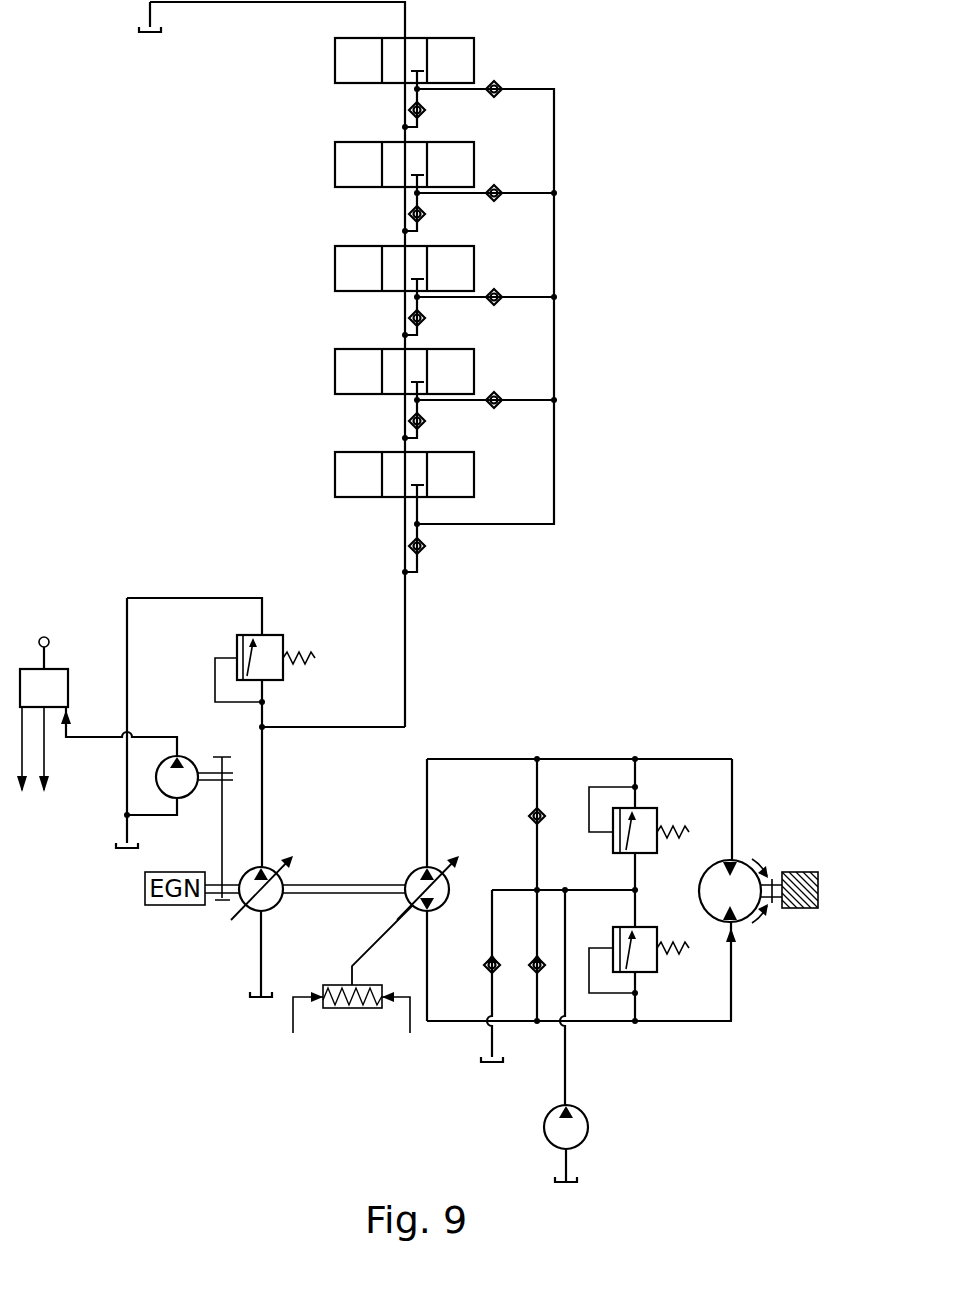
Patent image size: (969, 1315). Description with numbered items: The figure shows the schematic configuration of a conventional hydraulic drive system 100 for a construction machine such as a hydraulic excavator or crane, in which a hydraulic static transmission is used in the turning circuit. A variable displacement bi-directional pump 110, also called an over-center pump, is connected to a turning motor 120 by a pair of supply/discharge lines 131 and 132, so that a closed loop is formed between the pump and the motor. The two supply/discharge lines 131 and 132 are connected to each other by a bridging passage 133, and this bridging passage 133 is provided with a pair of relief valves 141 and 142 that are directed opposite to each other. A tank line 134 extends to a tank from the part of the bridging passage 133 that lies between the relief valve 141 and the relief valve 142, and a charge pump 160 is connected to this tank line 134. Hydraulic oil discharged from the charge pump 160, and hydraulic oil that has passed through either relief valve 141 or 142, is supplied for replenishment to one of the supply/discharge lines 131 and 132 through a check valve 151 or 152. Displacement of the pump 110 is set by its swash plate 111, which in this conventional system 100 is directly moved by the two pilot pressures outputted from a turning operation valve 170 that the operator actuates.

The hydraulic drive system 100 is at (682, 556).
The variable displacement bi-directional pump 110 is at (410, 868).
The swash plate 111 is at (378, 940).
The turning motor 120 is at (755, 860).
The supply/discharge line 131 is at (686, 757).
The supply/discharge line 132 is at (703, 1023).
The bridging passage 133 is at (637, 868).
The tank line 134 is at (509, 888).
The relief valve 141 is at (658, 818).
The relief valve 142 is at (660, 965).
The check valve 151 is at (550, 805).
The check valve 152 is at (535, 972).
The charge pump 160 is at (592, 1127).
The turning operation valve 170 is at (60, 668).